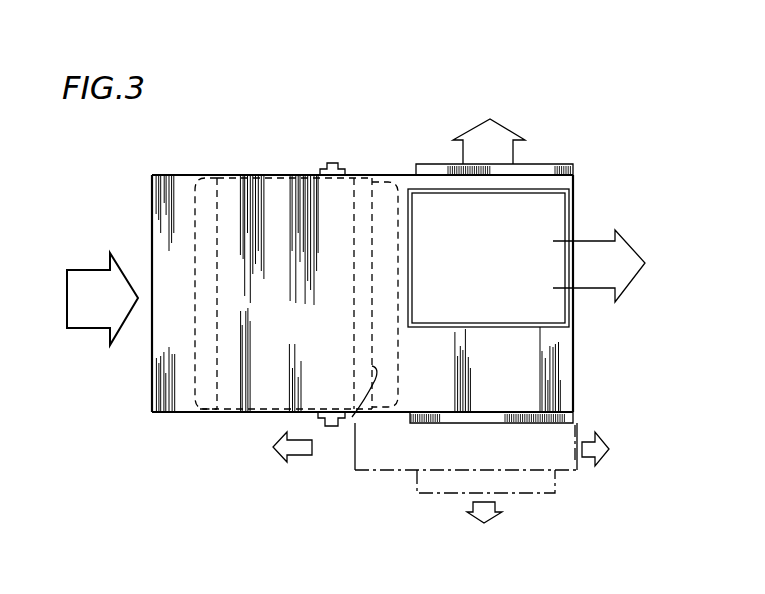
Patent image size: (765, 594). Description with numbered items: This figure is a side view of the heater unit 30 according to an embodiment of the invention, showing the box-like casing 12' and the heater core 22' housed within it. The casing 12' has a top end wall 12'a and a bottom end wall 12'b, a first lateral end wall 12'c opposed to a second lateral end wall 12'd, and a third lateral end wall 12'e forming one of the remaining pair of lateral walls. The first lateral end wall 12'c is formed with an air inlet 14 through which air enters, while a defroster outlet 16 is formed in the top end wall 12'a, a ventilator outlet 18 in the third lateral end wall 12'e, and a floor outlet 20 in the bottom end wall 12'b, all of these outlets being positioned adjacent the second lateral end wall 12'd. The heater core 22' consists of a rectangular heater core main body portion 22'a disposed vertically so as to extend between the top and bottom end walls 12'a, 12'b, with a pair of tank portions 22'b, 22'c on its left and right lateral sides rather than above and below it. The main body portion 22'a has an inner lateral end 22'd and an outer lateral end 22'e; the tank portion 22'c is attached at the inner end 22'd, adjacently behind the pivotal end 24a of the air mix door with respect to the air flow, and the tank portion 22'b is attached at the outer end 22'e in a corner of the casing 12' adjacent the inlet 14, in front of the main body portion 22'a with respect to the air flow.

The casing 12' is at (374, 306).
The top end wall 12'a is at (362, 147).
The bottom end wall 12'b is at (362, 453).
The first lateral end wall 12'c is at (119, 293).
The second lateral end wall 12'd is at (605, 293).
The third lateral end wall 12'e is at (250, 430).
The air inlet 14 is at (150, 370).
The defroster outlet 16 is at (552, 165).
The ventilator outlet 18 is at (562, 222).
The floor outlet 20 is at (545, 487).
The heater core 22' is at (293, 289).
The heater core main body portion 22'a is at (294, 148).
The tank portion 22'b is at (204, 264).
The tank portion 22'c is at (398, 264).
The inner lateral end 22'd is at (180, 320).
The outer lateral end 22'e is at (288, 430).
The pivotal end 24a is at (340, 166).
The heater unit 30 is at (445, 112).